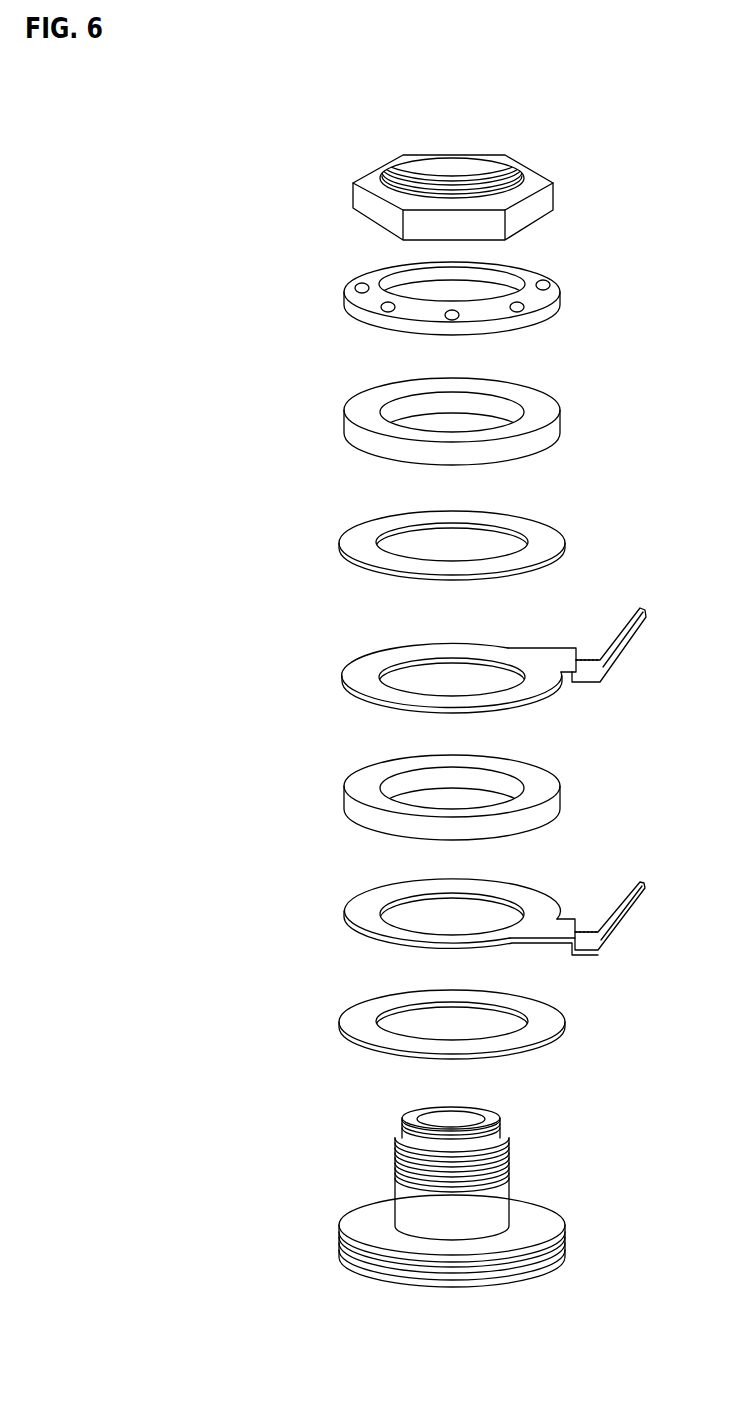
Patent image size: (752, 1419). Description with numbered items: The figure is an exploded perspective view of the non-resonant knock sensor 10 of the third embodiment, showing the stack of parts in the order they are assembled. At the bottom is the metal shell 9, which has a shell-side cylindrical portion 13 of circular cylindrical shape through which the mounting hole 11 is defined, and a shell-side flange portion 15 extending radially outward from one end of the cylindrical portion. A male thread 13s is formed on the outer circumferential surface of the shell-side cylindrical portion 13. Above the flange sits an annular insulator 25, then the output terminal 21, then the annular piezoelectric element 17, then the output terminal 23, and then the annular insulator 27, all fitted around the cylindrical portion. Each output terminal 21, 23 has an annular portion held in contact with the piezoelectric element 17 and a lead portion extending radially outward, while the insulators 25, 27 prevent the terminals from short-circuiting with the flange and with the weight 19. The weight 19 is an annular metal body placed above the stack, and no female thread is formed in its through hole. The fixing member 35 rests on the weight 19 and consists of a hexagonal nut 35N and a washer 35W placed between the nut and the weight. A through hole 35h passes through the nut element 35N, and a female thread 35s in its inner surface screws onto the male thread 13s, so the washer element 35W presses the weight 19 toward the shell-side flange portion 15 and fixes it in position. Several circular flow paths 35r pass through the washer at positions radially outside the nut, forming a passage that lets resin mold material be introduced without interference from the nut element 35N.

The non-resonant knock sensor 10 is at (228, 272).
The fixing member 35 is at (637, 228).
The hexagonal nut 35N is at (552, 214).
The through hole 35h is at (452, 199).
The female thread 35s is at (482, 178).
The washer 35W is at (560, 291).
The flow paths 35r is at (358, 283).
The weight 19 is at (560, 424).
The annular insulator 27 is at (565, 547).
The output terminal 23 is at (552, 690).
The piezoelectric element 17 is at (560, 800).
The output terminal 21 is at (553, 900).
The annular insulator 25 is at (568, 1020).
The metal shell 9 is at (360, 1166).
The mounting hole 11 is at (472, 1117).
The shell-side cylindrical portion 13 is at (495, 1208).
The male thread 13s is at (512, 1138).
The shell-side flange portion 15 is at (565, 1243).